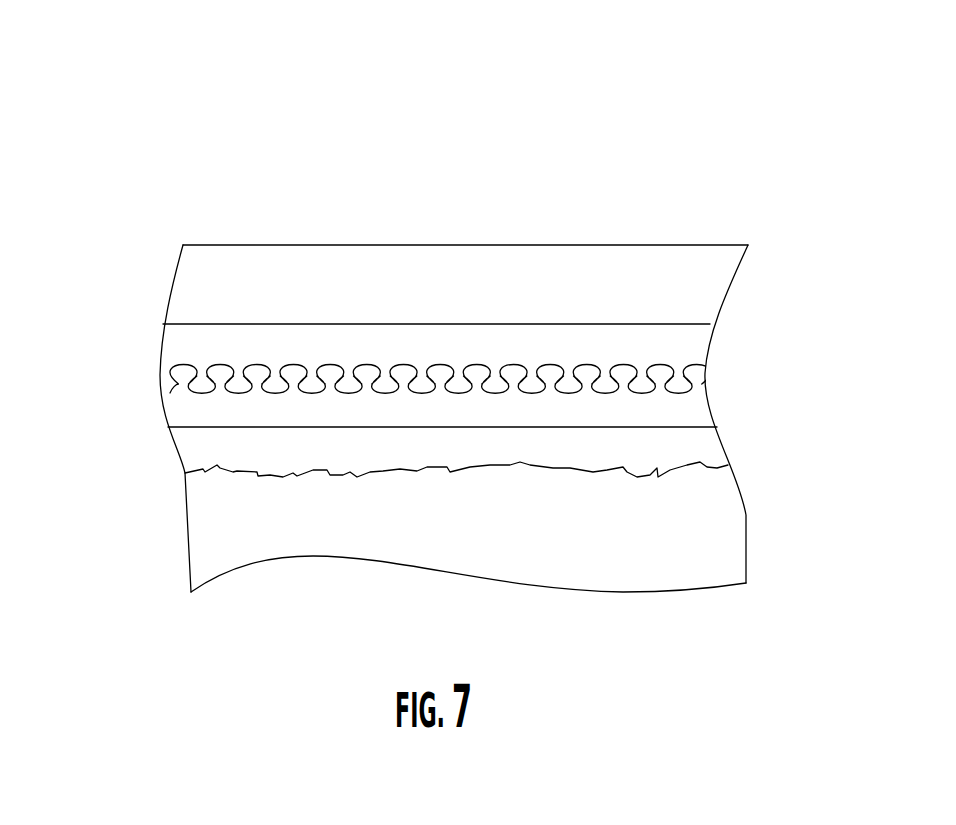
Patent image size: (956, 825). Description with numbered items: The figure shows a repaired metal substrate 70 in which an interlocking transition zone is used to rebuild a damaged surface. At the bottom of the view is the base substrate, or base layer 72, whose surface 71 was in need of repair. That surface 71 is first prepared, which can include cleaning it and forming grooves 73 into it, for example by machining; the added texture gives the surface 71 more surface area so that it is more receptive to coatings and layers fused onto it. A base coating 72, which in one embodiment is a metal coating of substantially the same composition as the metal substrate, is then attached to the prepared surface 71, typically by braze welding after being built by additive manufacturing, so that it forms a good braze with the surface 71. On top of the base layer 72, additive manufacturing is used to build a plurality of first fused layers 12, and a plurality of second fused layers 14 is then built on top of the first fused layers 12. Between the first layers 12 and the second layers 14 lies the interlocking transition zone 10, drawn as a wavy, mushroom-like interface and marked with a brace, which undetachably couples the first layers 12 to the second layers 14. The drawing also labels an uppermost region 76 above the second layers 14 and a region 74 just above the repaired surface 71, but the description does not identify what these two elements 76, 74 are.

The repaired metal substrate 70 is at (68, 118).
The outer cover layer 76 is at (328, 267).
The surface 71 is at (394, 449).
The plurality of second fused layers 14 is at (185, 337).
The interlocking transition zone 10 is at (148, 350).
The plurality of first fused layers 12 is at (192, 413).
The base layer 72 is at (466, 528).
The grooves 73 is at (510, 465).
The adhesive layer 74 is at (688, 443).